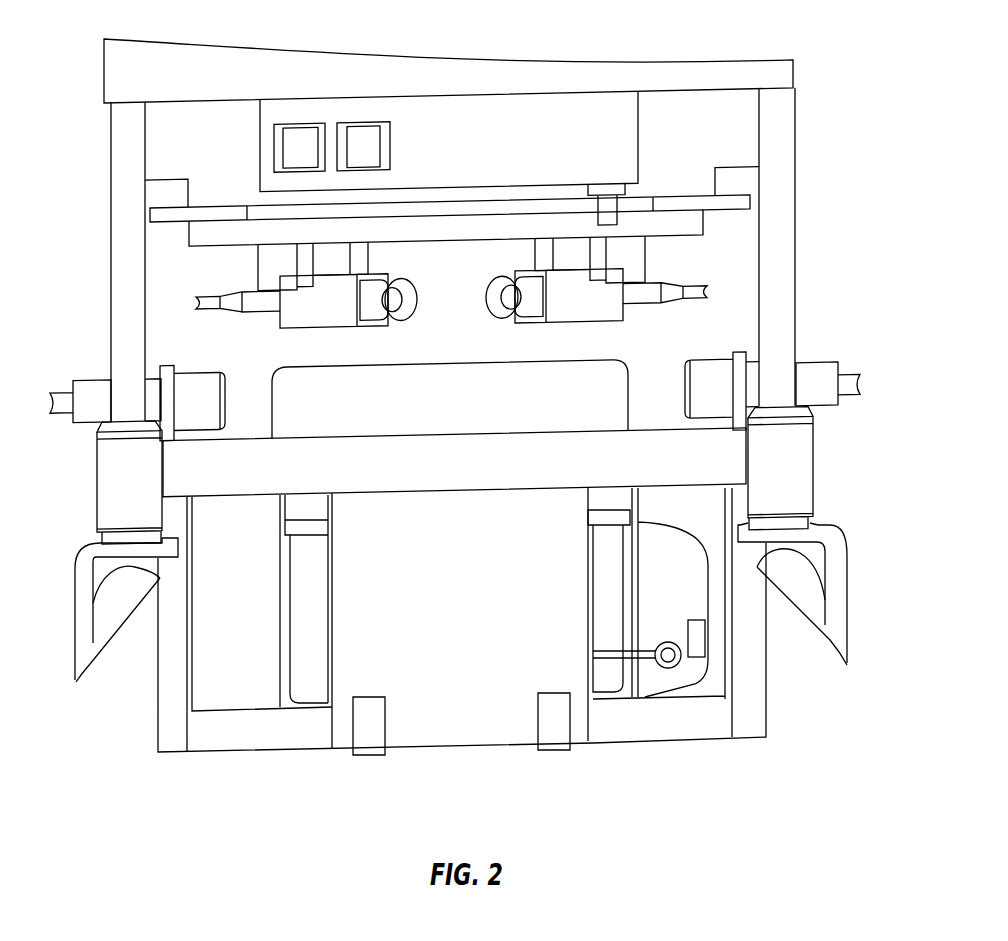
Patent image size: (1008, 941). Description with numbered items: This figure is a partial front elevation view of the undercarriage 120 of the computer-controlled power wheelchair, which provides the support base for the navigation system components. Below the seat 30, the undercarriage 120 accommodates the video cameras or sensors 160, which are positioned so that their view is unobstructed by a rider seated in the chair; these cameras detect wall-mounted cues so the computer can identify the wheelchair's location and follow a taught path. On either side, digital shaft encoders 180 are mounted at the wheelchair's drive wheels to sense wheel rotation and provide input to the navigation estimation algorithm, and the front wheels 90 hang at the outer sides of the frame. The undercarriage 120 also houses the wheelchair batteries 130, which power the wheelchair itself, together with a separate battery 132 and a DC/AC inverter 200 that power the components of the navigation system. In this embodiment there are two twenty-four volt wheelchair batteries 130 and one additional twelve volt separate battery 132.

The seat 30 is at (463, 70).
The front wheels 90 is at (810, 588).
The undercarriage 120 is at (175, 743).
The batteries 130 is at (470, 412).
The separate battery 132 is at (314, 580).
The video camera 160 is at (503, 314).
The digital shaft encoder 180 is at (815, 367).
The DC/AC inverter 200 is at (665, 583).